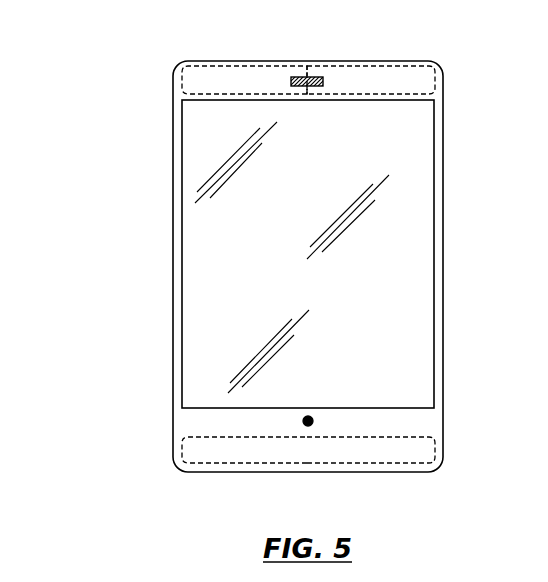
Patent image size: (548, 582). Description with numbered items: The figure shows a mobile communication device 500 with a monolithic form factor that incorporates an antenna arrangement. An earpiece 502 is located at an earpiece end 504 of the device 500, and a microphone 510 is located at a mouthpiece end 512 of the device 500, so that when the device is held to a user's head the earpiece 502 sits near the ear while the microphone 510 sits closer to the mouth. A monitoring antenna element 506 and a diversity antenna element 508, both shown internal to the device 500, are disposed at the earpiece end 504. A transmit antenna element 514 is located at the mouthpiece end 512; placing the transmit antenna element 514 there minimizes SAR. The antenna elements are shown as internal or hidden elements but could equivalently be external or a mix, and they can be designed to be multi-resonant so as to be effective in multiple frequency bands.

The mobile communication device 500 is at (47, 210).
The earpiece 502 is at (319, 75).
The earpiece end 504 is at (443, 83).
The monitoring antenna element 506 is at (213, 64).
The diversity antenna element 508 is at (390, 63).
The microphone 510 is at (313, 421).
The mouthpiece end 512 is at (443, 453).
The transmit antenna element 514 is at (213, 465).